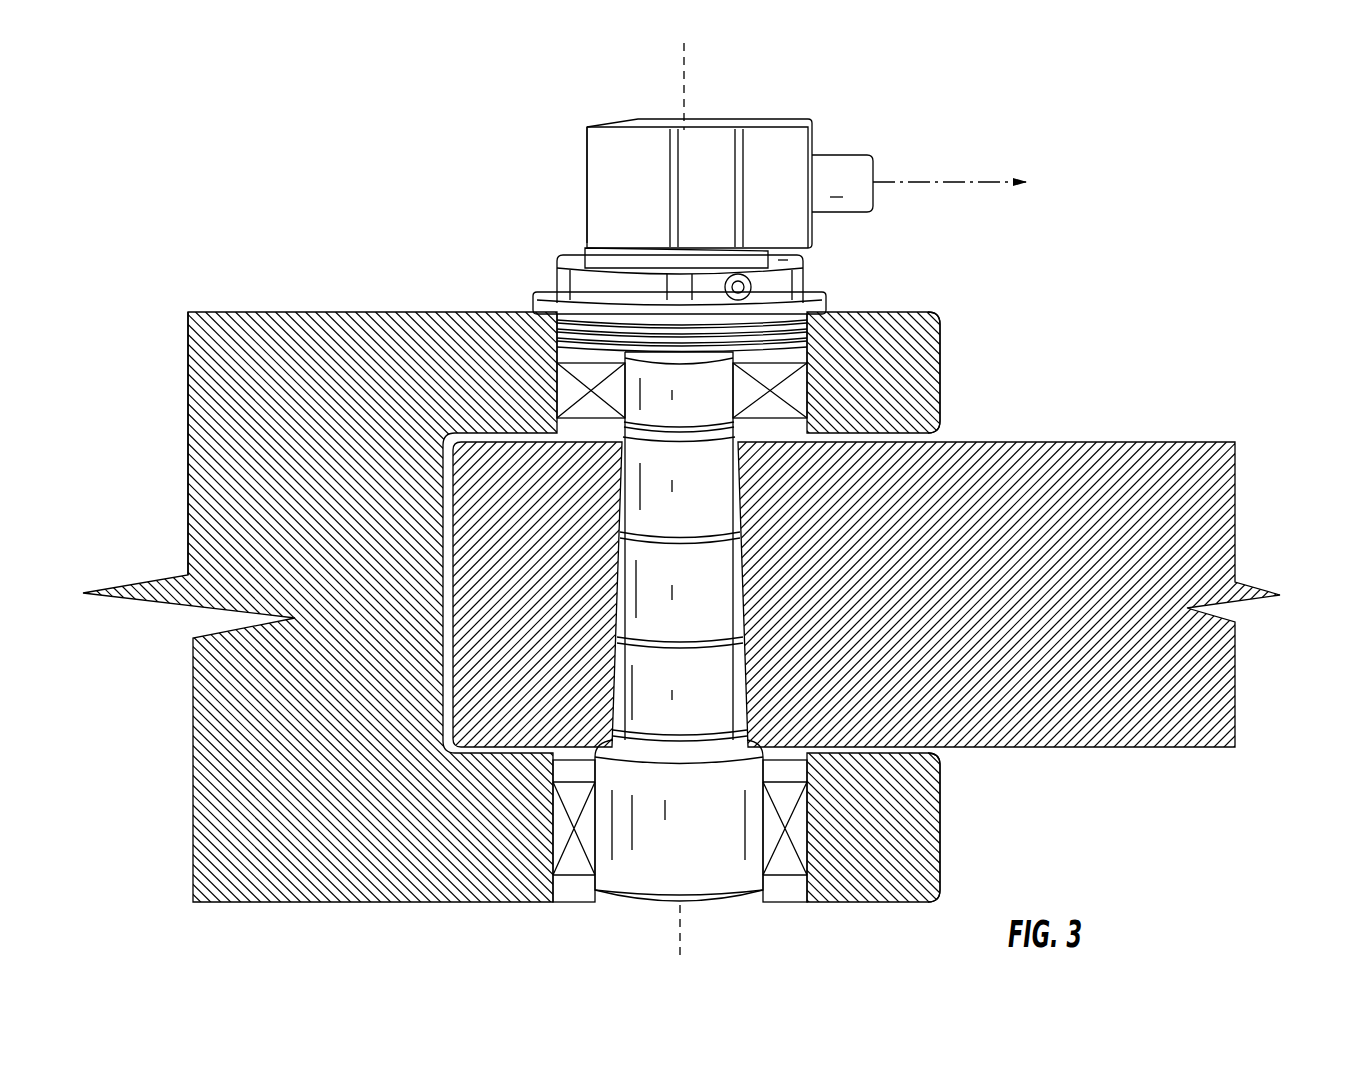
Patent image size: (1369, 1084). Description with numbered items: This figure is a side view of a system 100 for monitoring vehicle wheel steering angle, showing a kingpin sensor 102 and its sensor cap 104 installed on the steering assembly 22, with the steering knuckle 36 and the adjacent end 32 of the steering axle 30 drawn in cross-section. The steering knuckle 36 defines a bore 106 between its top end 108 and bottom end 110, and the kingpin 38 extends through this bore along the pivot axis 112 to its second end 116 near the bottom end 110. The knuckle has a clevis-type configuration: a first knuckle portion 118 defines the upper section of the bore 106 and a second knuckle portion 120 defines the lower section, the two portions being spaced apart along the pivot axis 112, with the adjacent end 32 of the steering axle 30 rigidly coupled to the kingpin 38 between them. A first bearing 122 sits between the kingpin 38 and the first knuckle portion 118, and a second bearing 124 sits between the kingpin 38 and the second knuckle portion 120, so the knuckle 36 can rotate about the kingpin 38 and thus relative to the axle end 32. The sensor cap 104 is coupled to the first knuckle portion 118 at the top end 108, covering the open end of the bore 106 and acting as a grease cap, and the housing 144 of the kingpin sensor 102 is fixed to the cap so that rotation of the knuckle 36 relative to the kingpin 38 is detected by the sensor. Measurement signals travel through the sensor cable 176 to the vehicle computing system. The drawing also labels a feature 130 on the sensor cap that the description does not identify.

The system 100 is at (698, 501).
The steering assembly 22 is at (680, 573).
The steering knuckle 36 is at (176, 550).
The pivot axis 112 is at (687, 86).
The kingpin sensor 102 is at (679, 180).
The housing 144 is at (587, 178).
The sensor cap 104 is at (657, 283).
The first bearing 122 is at (573, 387).
The nut plate 130 is at (803, 266).
The top end 108 is at (993, 590).
The first knuckle portion 118 is at (915, 358).
The first kingpin 38 is at (787, 650).
The steering axle 30 is at (684, 697).
The adjacent end 32 is at (985, 728).
The second knuckle portion 120 is at (913, 824).
The bottom end 110 is at (964, 918).
The bore 106 is at (681, 855).
The second end 116 is at (715, 903).
The second bearing 124 is at (787, 865).
The sensor cable 176 is at (970, 183).